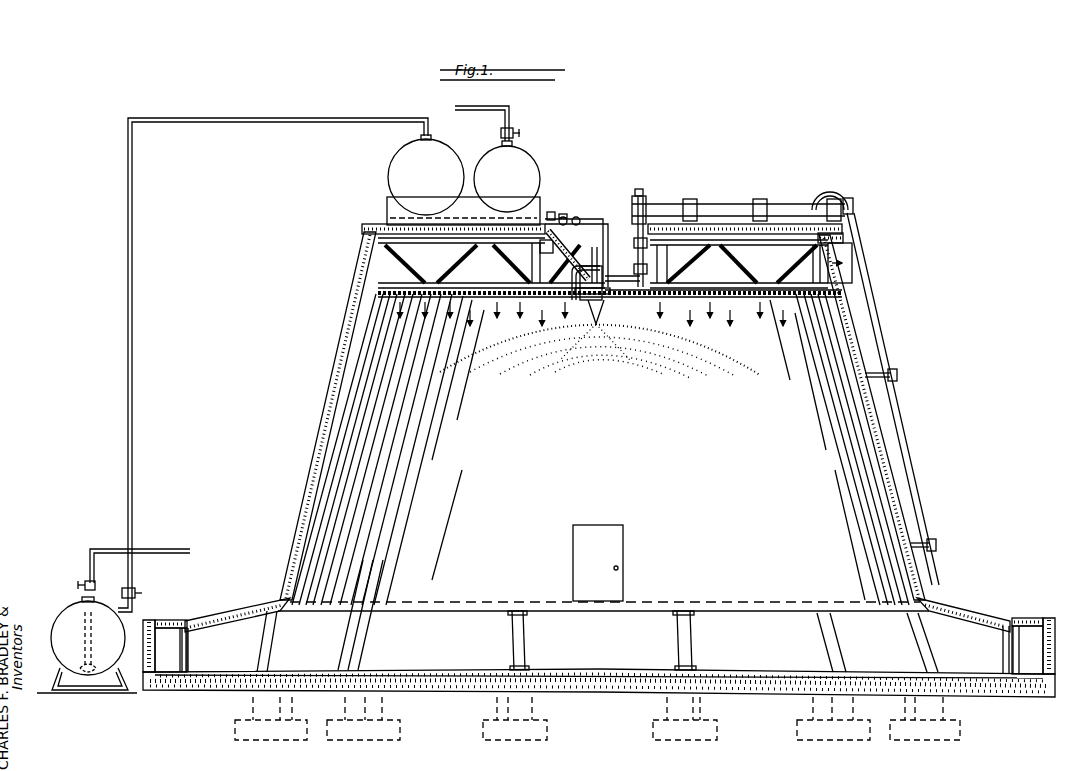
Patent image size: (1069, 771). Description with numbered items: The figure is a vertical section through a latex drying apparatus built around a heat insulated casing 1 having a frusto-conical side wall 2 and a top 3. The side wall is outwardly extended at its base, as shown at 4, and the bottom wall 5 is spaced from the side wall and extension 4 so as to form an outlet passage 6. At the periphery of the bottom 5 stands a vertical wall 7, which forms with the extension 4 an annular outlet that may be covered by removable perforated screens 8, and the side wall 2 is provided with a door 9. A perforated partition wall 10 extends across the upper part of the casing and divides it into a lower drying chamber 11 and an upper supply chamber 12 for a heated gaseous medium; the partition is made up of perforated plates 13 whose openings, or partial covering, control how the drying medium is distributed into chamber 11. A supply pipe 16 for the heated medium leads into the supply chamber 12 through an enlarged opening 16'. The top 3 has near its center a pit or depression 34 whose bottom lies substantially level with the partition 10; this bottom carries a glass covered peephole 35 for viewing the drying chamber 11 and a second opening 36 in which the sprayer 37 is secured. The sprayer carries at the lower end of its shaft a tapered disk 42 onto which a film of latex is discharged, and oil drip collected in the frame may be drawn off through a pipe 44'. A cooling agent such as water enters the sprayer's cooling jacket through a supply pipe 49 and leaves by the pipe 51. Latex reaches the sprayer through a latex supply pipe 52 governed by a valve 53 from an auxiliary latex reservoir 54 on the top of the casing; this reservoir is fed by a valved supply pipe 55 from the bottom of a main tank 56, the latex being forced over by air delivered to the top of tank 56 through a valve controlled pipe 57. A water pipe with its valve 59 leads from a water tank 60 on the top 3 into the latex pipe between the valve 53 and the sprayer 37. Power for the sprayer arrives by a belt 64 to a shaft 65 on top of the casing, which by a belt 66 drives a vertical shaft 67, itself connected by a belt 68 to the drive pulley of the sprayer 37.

The heat insulated casing 1 is at (332, 378).
The frusto-conical side wall 2 is at (316, 455).
The top 3 is at (378, 226).
The outward extension of side wall 4 is at (258, 604).
The bottom wall 5 is at (455, 670).
The outlet passage 6 is at (225, 680).
The vertical wall 7 is at (143, 660).
The removable perforated screens 8 is at (170, 620).
The door 9 is at (622, 553).
The perforated partition wall 10 is at (738, 298).
The drying chamber 11 is at (660, 437).
The supply chamber 12 is at (603, 263).
The perforated plates 13 is at (488, 294).
The supply pipe for heated drying medium 16 is at (856, 230).
The enlarged opening 16' is at (883, 399).
The pit or depression 34 is at (585, 230).
The glass covered peephole 35 is at (636, 292).
The second opening 36 is at (586, 300).
The sprayer 37 is at (600, 306).
The tapered disk 42 is at (590, 336).
The oil drip removal pipe 44' is at (574, 357).
The cooling agent supply pipe 49 is at (599, 258).
The cooling agent exhaust pipe 51 is at (574, 296).
The latex supply pipe 52 is at (605, 219).
The valve 53 is at (563, 212).
The auxiliary latex reservoir 54 is at (426, 175).
The valved supply pipe 55 is at (248, 123).
The main tank 56 is at (68, 618).
The valve controlled air pipe 57 is at (160, 549).
The water valve 59 is at (551, 210).
The water tank 60 is at (497, 159).
The belt 64 is at (853, 202).
The shaft on top of casing 65 is at (735, 205).
The belt 66 is at (646, 203).
The vertical shaft 67 is at (638, 237).
The belt 68 is at (625, 275).